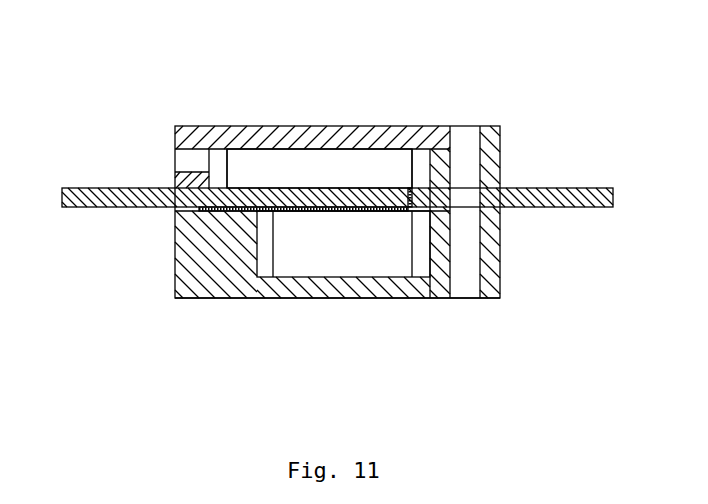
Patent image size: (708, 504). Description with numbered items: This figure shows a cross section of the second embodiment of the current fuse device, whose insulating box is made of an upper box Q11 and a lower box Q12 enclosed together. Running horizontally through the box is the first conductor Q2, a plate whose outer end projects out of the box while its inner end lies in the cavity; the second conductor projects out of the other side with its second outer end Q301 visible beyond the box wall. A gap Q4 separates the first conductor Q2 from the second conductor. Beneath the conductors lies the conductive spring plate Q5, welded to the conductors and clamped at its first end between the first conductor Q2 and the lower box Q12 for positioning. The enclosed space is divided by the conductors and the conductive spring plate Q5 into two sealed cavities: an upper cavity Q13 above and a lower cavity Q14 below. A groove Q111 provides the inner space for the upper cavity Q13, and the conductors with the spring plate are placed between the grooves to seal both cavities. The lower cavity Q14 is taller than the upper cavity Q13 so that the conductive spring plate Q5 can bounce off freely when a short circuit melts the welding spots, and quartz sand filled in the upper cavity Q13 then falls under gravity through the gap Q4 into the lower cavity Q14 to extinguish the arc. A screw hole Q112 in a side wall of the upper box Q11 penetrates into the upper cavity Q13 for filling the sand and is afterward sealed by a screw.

The upper box Q11 is at (327, 127).
The lower box Q12 is at (408, 287).
The upper cavity Q13 is at (268, 165).
The lower cavity Q14 is at (345, 265).
The groove Q111 is at (405, 165).
The screw hole Q112 is at (180, 170).
The first conductor Q2 is at (82, 192).
The second outer end Q301 is at (557, 208).
The conductive spring plate Q5 is at (300, 211).
The gap Q4 is at (417, 205).